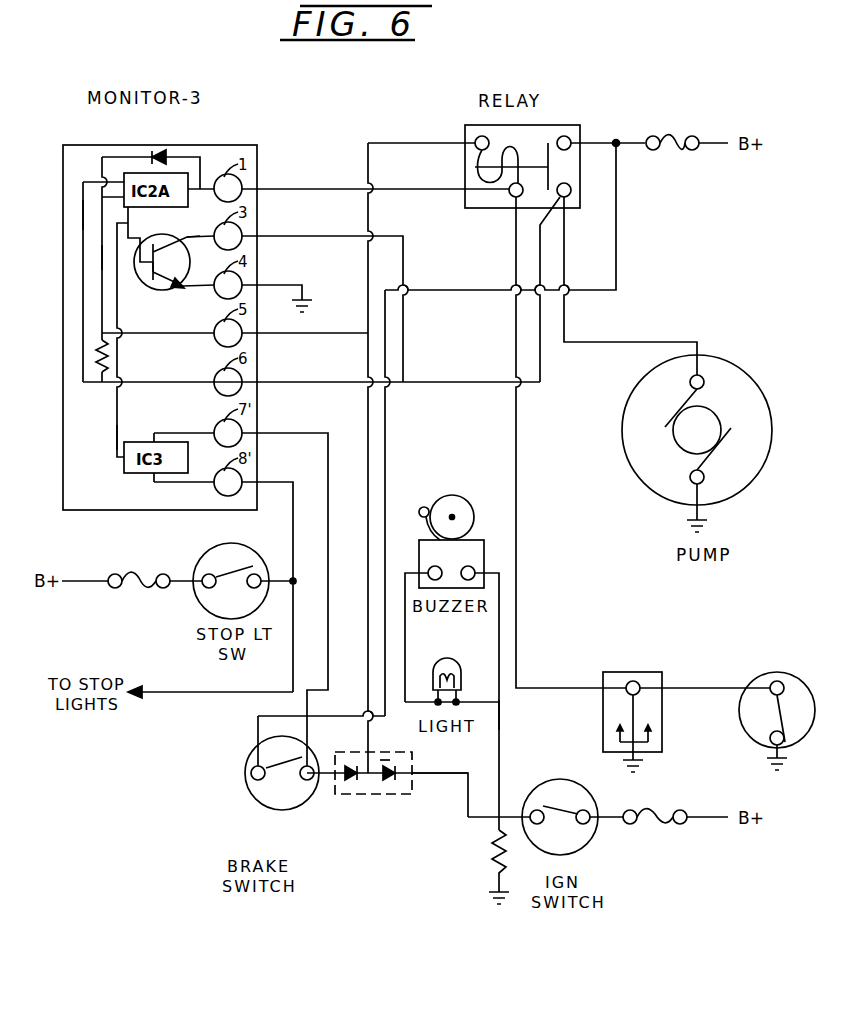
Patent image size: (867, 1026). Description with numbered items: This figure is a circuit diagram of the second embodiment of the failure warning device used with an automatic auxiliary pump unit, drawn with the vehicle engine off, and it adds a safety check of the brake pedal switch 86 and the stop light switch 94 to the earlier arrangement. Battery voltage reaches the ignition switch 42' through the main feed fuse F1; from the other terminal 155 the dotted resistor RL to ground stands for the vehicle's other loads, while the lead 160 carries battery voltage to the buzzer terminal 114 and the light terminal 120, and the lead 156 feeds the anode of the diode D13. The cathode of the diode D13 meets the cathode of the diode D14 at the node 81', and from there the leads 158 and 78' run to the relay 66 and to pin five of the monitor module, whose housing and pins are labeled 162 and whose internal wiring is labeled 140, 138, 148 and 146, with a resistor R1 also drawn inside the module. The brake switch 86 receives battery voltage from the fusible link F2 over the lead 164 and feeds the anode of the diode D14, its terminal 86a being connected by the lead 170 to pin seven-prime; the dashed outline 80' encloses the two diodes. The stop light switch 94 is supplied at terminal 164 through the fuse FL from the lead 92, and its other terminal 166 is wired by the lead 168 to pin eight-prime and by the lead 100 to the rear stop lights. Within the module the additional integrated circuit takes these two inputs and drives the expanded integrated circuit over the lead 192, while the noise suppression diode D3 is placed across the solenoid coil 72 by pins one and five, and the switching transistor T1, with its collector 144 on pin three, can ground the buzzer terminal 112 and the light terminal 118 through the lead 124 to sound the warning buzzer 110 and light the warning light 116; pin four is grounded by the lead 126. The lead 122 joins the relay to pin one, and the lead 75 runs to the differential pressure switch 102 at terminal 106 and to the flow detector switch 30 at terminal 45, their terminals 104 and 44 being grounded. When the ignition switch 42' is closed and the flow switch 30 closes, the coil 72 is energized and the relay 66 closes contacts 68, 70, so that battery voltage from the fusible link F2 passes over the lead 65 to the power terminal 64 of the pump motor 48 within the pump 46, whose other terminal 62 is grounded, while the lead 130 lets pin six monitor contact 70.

The monitor housing / conductor 162 is at (80, 145).
The conductor 140 is at (83, 214).
The conductor 138 is at (102, 258).
The conductor 148 is at (152, 270).
The collector 144 is at (196, 240).
The conductor 146 is at (180, 290).
The lead 192 is at (117, 440).
The resistor R1 is at (98, 352).
The switching transistor T1 is at (158, 291).
The noise suppression diode D3 is at (162, 155).
The lead 122 is at (268, 188).
The lead 124 is at (272, 236).
The conductor 126 is at (268, 285).
The lead 78' is at (358, 443).
The lead 130 is at (284, 384).
The lead 158 is at (385, 420).
The lead / brake light switch terminal 164 is at (616, 232).
The lead 170 is at (328, 455).
The lead 168 is at (293, 545).
The lead 100 is at (140, 700).
The conductor 92 is at (80, 581).
The fuse FL is at (145, 572).
The brake light switch 94 is at (200, 548).
The terminal 166 is at (254, 588).
The relay 66 is at (545, 128).
The solenoid coil 72 is at (482, 157).
The relay contact 68 is at (571, 143).
The relay contact 70 is at (564, 200).
The fusible link F2 is at (664, 142).
The lead 75 is at (516, 622).
The lead 65 is at (610, 342).
The pump 46 is at (655, 494).
The pump motor 48 is at (724, 395).
The motor power terminal 64 is at (704, 382).
The motor terminal 62 is at (704, 480).
The warning buzzer 110 is at (462, 495).
The buzzer terminal 112 is at (440, 570).
The buzzer terminal 114 is at (475, 573).
The warning light 116 is at (460, 662).
The light terminal 118 is at (438, 702).
The light terminal 120 is at (456, 702).
The lead 160 is at (499, 712).
The diode assembly 80' is at (364, 757).
The node 81' is at (417, 753).
The lead 156 is at (424, 775).
The diode D13 is at (390, 788).
The diode D14 is at (353, 785).
The brake switch 86 is at (262, 806).
The terminal 86a is at (305, 785).
The resistor RL is at (492, 865).
The terminal 155 is at (540, 812).
The ignition switch 42' is at (572, 820).
The main feed fuse F1 is at (645, 810).
The differential pressure switch 102 is at (662, 721).
The terminal 106 is at (637, 681).
The terminal 104 is at (612, 743).
The flow detector switch 30 is at (748, 686).
The terminal 45 is at (782, 684).
The terminal 44 is at (770, 742).